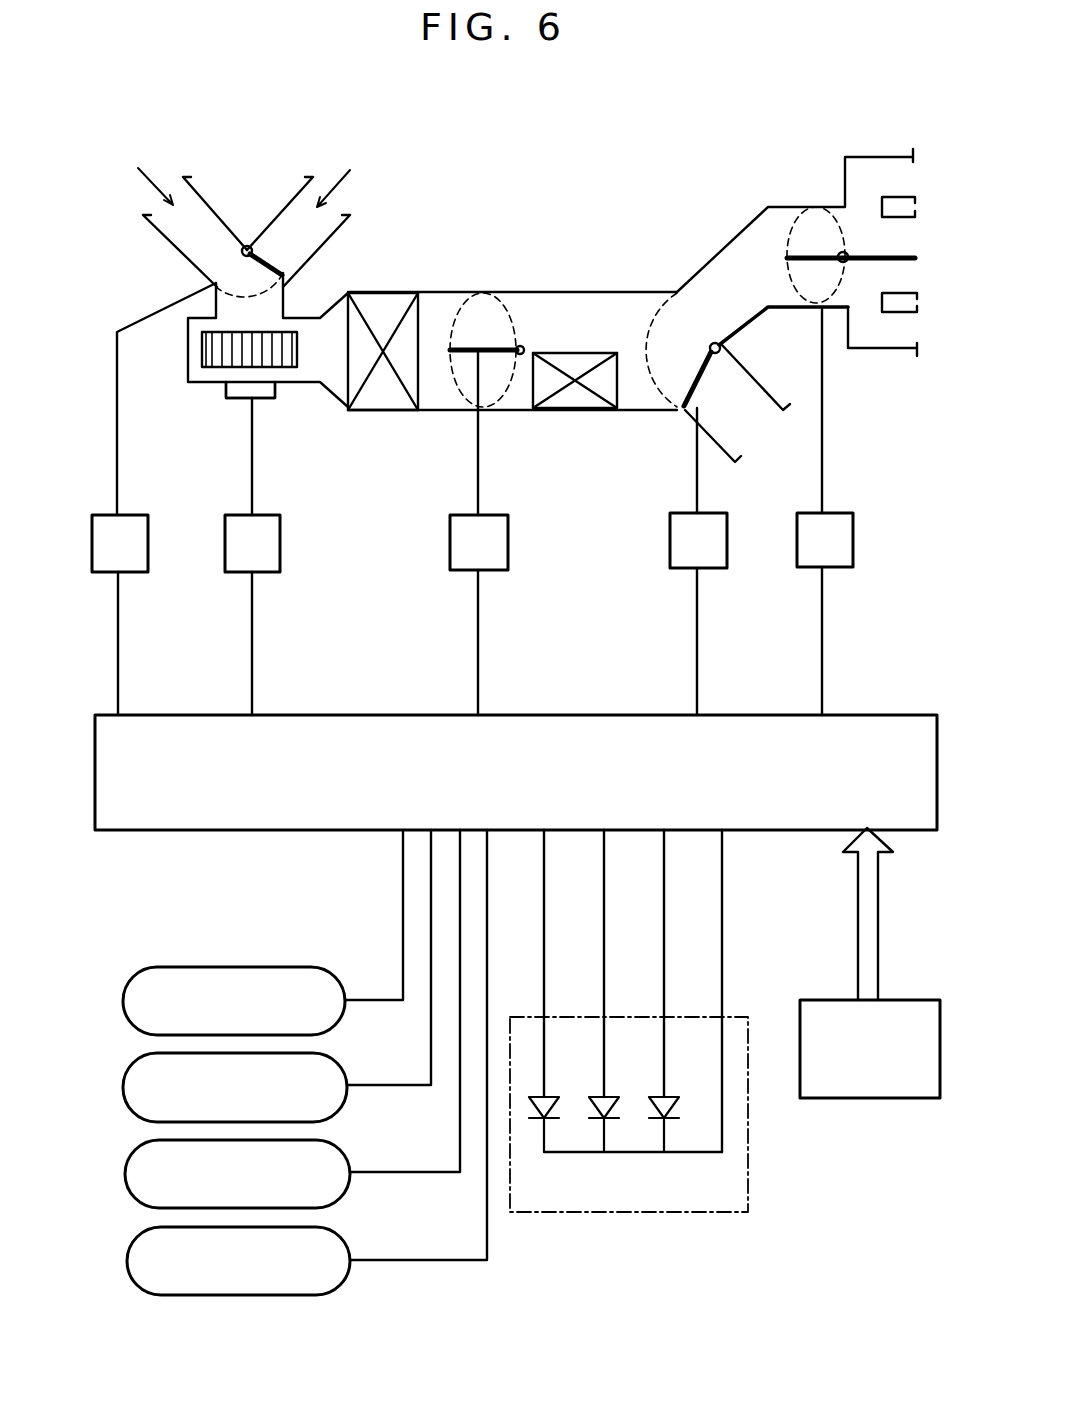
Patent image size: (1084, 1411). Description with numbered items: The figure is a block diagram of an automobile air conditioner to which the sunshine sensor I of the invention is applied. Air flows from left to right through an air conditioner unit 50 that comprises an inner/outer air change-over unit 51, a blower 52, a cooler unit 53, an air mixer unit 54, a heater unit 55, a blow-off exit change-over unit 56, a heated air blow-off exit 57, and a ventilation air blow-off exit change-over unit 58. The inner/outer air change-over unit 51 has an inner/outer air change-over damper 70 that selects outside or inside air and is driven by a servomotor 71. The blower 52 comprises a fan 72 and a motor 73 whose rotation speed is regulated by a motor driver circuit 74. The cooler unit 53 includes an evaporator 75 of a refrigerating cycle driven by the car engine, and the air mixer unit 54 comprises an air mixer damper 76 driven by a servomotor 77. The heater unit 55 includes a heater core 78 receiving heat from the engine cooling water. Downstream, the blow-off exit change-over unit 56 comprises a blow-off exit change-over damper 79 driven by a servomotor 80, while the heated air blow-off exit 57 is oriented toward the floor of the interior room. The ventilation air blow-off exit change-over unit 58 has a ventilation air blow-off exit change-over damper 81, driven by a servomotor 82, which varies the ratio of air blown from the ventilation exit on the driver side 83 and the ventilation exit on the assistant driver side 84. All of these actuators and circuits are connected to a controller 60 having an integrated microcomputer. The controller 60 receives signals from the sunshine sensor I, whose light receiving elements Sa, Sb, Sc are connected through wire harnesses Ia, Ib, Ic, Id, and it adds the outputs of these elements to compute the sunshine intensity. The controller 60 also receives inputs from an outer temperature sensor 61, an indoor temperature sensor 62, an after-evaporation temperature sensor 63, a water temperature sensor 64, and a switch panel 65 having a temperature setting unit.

The air conditioner unit 50 is at (533, 183).
The inner/outer air change-over unit 51 is at (248, 205).
The blower 52 is at (273, 403).
The cooler unit 53 is at (395, 250).
The air mixer unit 54 is at (502, 273).
The heater unit 55 is at (597, 277).
The blow-off exit change-over unit 56 is at (640, 468).
The heated air blow-off exit 57 is at (745, 422).
The ventilation air blow-off exit change-over unit 58 is at (762, 191).
The controller 60 is at (190, 715).
The outer temperature sensor 61 is at (320, 963).
The indoor temperature sensor 62 is at (340, 1060).
The after-evaporation temperature sensor 63 is at (347, 1150).
The water temperature sensor 64 is at (352, 1243).
The switch panel 65 is at (830, 1000).
The inner/outer air change-over damper 70 is at (265, 270).
The servomotor 71 is at (148, 488).
The fan 72 is at (213, 362).
The motor 73 is at (242, 400).
The motor driver circuit 74 is at (280, 532).
The evaporator 75 is at (402, 300).
The air mixer damper 76 is at (503, 347).
The servomotor 77 is at (450, 523).
The heater core 78 is at (587, 353).
The blow-off exit change-over damper 79 is at (687, 415).
The servomotor 80 is at (717, 570).
The ventilation air blow-off exit change-over damper 81 is at (803, 262).
The servomotor 82 is at (842, 568).
The ventilation exit on the driver side 83 is at (865, 207).
The ventilation exit on the assistant driver side 84 is at (867, 313).
The sunshine sensor I is at (727, 1005).
The wire harness Ia is at (545, 925).
The wire harness Ib is at (605, 925).
The wire harness Ic is at (665, 925).
The wire harness Id is at (723, 925).
The light receiving element Sa is at (550, 1097).
The light receiving element Sb is at (610, 1097).
The light receiving element Sc is at (670, 1097).